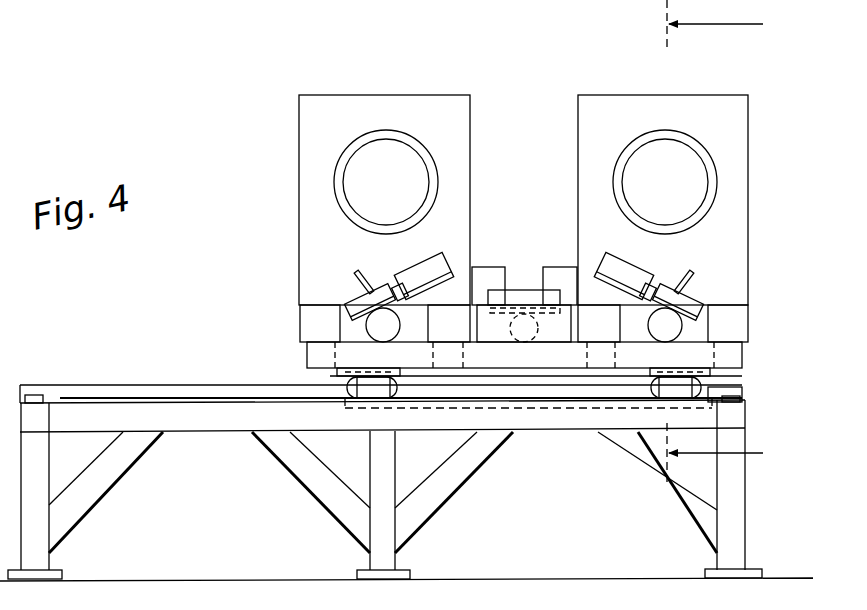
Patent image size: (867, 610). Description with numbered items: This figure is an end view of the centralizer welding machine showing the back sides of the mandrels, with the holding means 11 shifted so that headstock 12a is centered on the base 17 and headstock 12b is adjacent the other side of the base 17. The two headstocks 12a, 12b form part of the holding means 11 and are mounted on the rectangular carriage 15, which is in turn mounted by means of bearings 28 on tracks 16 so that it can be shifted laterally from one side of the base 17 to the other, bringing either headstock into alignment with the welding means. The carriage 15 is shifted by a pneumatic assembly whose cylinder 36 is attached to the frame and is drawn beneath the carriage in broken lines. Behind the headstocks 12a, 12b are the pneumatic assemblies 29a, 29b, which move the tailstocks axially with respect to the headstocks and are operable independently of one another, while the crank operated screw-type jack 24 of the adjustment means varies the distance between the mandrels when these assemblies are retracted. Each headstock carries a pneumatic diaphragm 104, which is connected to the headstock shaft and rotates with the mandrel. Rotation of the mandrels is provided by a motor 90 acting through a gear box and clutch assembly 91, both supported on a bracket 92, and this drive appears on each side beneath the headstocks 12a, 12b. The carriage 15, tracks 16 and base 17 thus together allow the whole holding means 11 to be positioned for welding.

The holding means 11 is at (531, 90).
The headstock 12a is at (444, 91).
The headstock 12b is at (716, 91).
The pneumatic diaphragm 104 is at (402, 191).
The pneumatic assembly 29a is at (484, 265).
The pneumatic assembly 29b is at (563, 265).
The crank operated screw-type jack 24 is at (513, 340).
The motor 90 is at (413, 269).
The bracket 92 is at (356, 274).
The gear box and clutch assembly 91 is at (350, 320).
The carriage 15 is at (745, 352).
The tracks 16 is at (53, 385).
The bearings 28 is at (717, 377).
The base 17 is at (752, 413).
The cylinder 36 is at (541, 409).